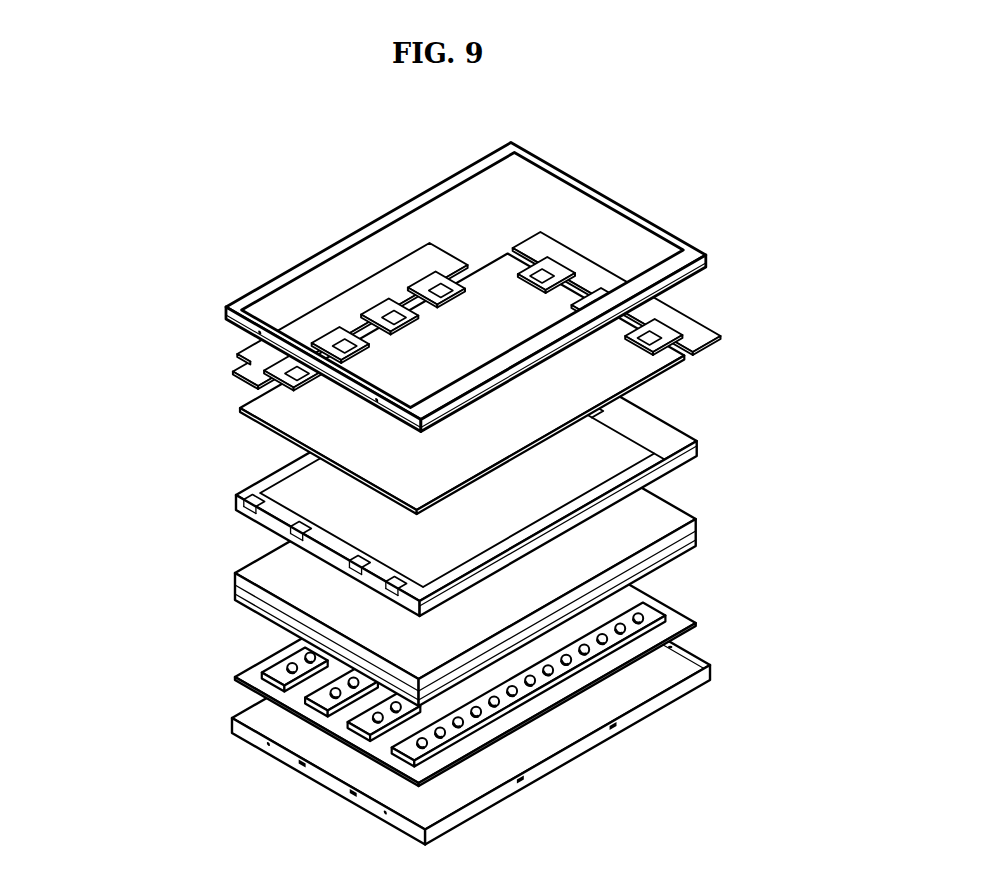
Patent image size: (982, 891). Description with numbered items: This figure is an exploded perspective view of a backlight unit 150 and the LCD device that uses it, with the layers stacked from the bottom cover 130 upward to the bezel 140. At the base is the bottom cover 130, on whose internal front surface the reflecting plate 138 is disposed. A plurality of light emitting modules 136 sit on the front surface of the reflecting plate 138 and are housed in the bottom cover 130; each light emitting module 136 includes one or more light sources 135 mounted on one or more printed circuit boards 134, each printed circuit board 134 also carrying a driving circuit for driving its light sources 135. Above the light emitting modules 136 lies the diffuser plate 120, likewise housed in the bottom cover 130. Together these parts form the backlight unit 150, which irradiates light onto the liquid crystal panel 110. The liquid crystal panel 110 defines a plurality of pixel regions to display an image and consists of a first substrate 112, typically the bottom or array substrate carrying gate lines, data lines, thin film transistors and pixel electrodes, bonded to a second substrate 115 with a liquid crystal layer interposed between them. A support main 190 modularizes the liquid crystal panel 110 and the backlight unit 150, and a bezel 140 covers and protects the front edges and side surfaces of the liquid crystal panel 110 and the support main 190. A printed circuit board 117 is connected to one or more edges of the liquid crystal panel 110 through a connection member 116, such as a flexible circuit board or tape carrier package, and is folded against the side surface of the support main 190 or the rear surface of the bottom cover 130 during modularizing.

The liquid crystal panel 110 is at (539, 335).
The first substrate 112 is at (512, 274).
The second substrate 115 is at (642, 368).
The connection member 116 is at (433, 282).
The printed circuit board 117 is at (360, 305).
The diffuser plate 120 is at (233, 588).
The bottom cover 130 is at (555, 730).
The printed circuit board 134 is at (285, 678).
The light source 135 is at (333, 692).
The light emitting module 136 is at (377, 690).
The reflecting plate 138 is at (285, 676).
The bezel 140 is at (667, 235).
The backlight unit 150 is at (363, 599).
The support main 190 is at (662, 442).